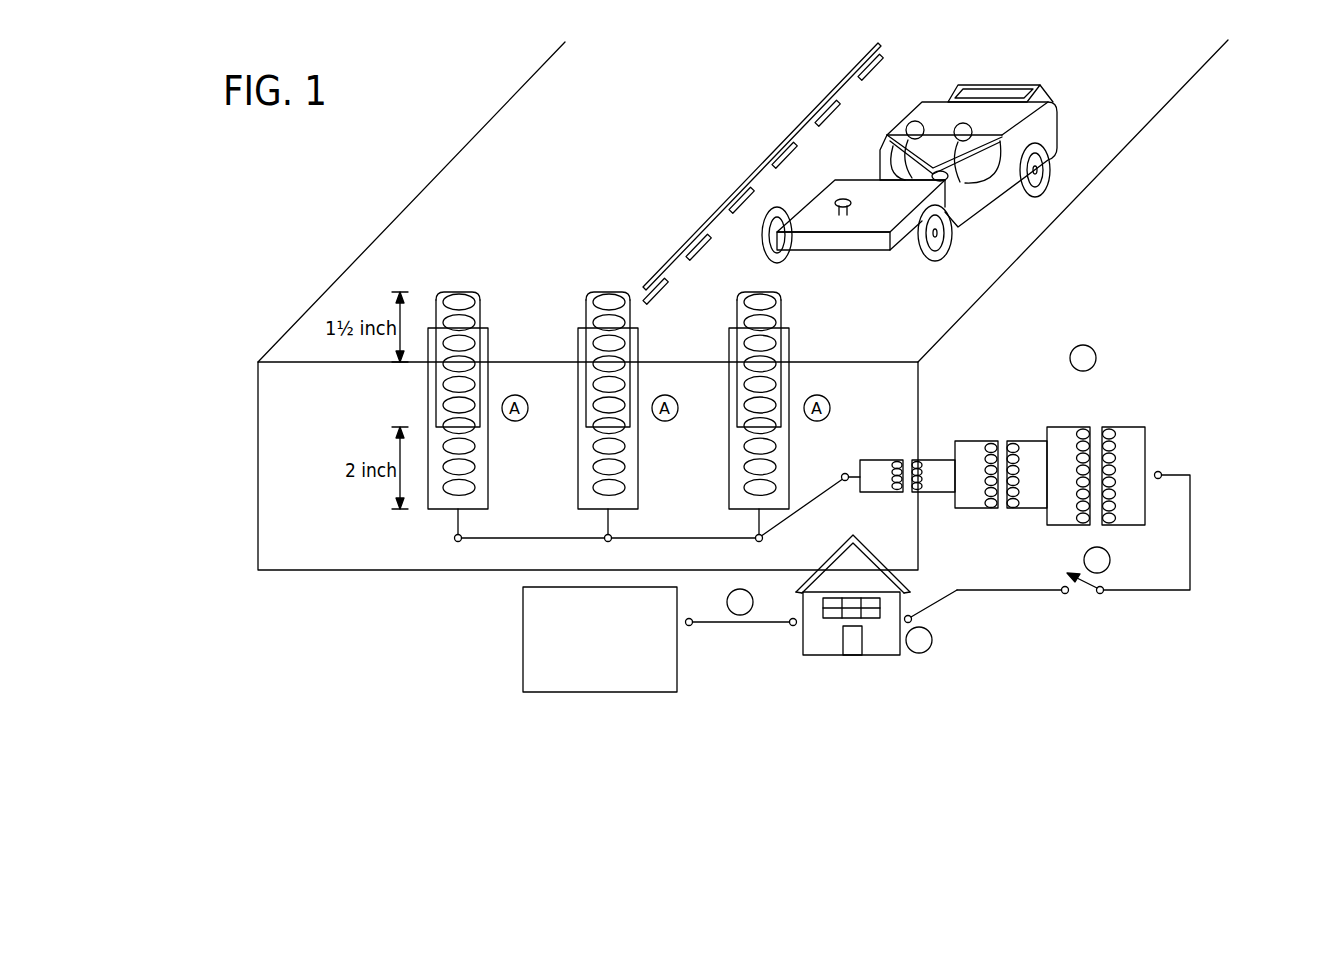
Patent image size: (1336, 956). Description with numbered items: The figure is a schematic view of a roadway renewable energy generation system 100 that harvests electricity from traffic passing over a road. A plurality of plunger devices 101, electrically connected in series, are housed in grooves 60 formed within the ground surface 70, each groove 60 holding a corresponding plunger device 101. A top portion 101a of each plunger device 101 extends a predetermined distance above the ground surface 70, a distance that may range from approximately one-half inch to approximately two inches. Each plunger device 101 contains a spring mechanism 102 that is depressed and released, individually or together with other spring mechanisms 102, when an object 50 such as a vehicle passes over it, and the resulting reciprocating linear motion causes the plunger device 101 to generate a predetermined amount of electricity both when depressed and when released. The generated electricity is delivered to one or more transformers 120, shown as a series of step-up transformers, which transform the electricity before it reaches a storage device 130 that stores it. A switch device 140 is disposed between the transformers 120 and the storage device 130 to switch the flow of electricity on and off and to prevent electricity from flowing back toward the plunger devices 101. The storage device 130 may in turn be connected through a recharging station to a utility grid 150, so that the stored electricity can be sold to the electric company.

The object 50 is at (934, 100).
The groove 60 is at (490, 345).
The ground surface 70 is at (258, 362).
The roadway renewable energy generation system 100 is at (514, 220).
The plunger device 101 is at (729, 470).
The top portion 101a is at (468, 290).
The spring mechanism 102 is at (446, 400).
The transformers 120 is at (1025, 345).
The storage device 130 is at (866, 548).
The switch device 140 is at (1022, 592).
The utility grid 150 is at (523, 658).